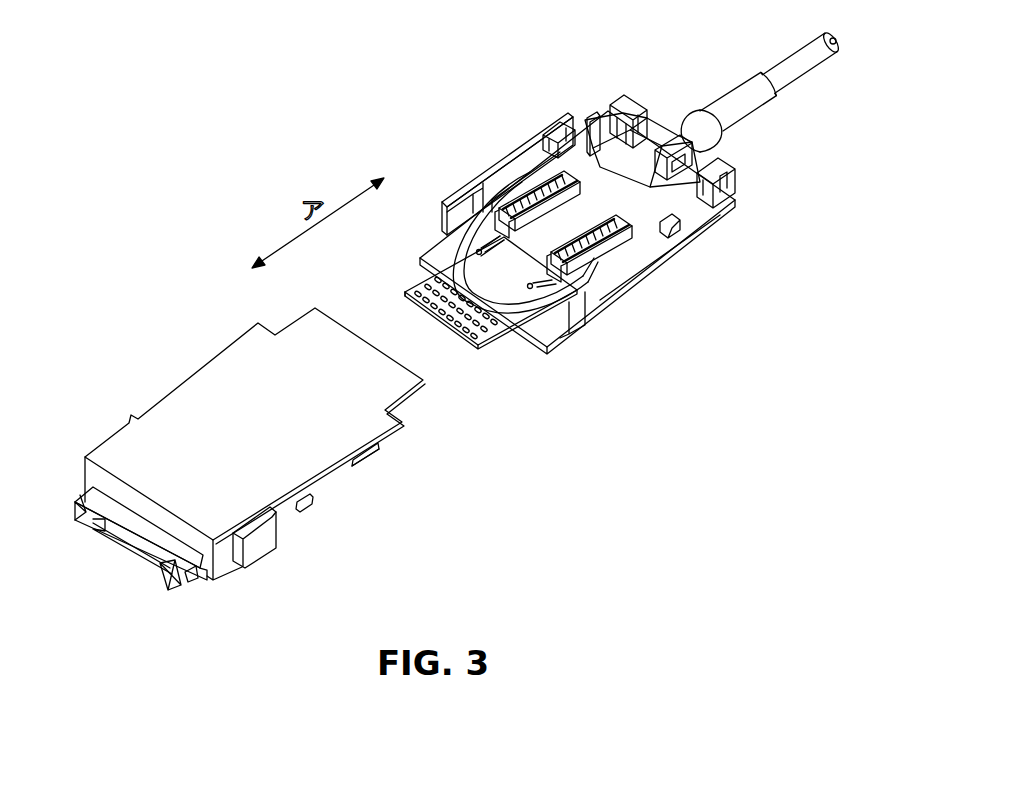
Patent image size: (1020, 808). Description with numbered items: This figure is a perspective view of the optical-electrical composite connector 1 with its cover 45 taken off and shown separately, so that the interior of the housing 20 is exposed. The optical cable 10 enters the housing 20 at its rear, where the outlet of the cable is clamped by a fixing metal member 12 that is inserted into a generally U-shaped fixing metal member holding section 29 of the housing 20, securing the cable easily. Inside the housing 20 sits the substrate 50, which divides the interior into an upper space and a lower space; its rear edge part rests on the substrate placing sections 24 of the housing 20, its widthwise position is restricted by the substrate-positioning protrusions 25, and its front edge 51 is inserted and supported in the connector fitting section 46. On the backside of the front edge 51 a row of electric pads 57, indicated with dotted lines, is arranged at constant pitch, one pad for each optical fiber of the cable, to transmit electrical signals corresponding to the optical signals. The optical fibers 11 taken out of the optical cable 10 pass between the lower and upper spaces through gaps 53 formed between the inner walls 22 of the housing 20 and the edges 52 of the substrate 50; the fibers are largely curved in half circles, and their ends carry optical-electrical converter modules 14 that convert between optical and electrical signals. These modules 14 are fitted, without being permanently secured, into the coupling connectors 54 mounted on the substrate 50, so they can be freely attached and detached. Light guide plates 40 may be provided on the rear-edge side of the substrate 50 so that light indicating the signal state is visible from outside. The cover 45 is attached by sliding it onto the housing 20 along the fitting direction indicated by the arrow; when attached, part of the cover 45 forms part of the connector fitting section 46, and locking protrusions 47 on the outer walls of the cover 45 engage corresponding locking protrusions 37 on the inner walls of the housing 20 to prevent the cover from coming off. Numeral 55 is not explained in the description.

The optical-electrical composite connector 1 is at (560, 395).
The optical cable 10 is at (795, 63).
The optical fibers 11 is at (450, 280).
The fixing metal member 12 is at (677, 133).
The optical-electrical converter modules 14 is at (543, 158).
The housing 20 is at (656, 274).
The inner walls 22 is at (502, 180).
The substrate placing sections 24 is at (567, 142).
The substrate-positioning protrusions 25 is at (458, 217).
The fixing metal member holding section 29 is at (723, 203).
The locking protrusions 37 is at (475, 212).
The light guide plates 40 is at (605, 123).
The cover 45 is at (182, 371).
The connector fitting section 46 is at (130, 523).
The locking protrusions 47 is at (310, 507).
The substrate 50 is at (648, 235).
The front edge 51 is at (435, 315).
The edges 52 is at (410, 287).
The gaps 53 is at (527, 178).
The coupling connectors 54 is at (607, 248).
The projection 55 is at (652, 217).
The electric pads 57 is at (495, 338).